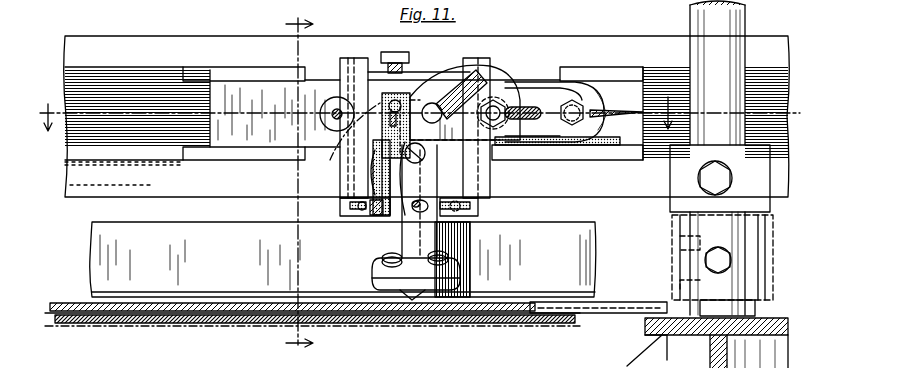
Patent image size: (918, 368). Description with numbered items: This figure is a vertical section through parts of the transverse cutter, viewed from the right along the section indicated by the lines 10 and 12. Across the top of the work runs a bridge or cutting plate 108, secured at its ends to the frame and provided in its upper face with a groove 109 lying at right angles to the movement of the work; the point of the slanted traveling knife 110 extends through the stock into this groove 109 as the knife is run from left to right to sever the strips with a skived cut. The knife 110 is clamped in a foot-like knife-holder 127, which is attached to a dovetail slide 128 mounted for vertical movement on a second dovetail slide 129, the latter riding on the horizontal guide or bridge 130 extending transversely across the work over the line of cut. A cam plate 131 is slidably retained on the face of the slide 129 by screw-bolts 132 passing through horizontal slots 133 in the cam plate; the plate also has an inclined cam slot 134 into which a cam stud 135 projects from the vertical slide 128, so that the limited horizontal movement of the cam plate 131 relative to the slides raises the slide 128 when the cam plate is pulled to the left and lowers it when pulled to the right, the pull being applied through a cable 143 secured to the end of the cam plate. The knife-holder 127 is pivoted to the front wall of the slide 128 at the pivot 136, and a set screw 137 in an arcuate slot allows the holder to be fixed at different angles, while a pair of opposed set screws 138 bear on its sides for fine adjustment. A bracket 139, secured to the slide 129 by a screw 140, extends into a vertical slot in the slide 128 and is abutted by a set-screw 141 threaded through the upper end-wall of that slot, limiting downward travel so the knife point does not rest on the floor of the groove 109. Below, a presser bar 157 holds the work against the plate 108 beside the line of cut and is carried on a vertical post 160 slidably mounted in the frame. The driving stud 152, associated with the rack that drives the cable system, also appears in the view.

The section line 10 is at (299, 183).
The section line 12 is at (409, 110).
The bridge or cutting plate 108 is at (628, 307).
The groove 109 is at (456, 325).
The traveling knife 110 is at (378, 282).
The knife-holder 127 is at (440, 250).
The dovetail slide 128 is at (380, 150).
The second dovetail slide 129 is at (198, 72).
The horizontal guide or bridge 130 is at (633, 46).
The cam plate 131 is at (497, 104).
The screw-bolts 132 is at (540, 88).
The horizontal slots 133 is at (530, 118).
The cam slot 134 is at (470, 82).
The cam stud 135 is at (432, 105).
The pivot 136 is at (420, 178).
The set screw 137 is at (419, 201).
The opposed set screws 138 is at (376, 216).
The bracket 139 is at (384, 108).
The screw 140 is at (383, 124).
The set-screw 141 is at (392, 58).
The cable 143 is at (640, 110).
The driving stud 152 is at (330, 108).
The presser bar 157 is at (343, 259).
The vertical post 160 is at (748, 28).